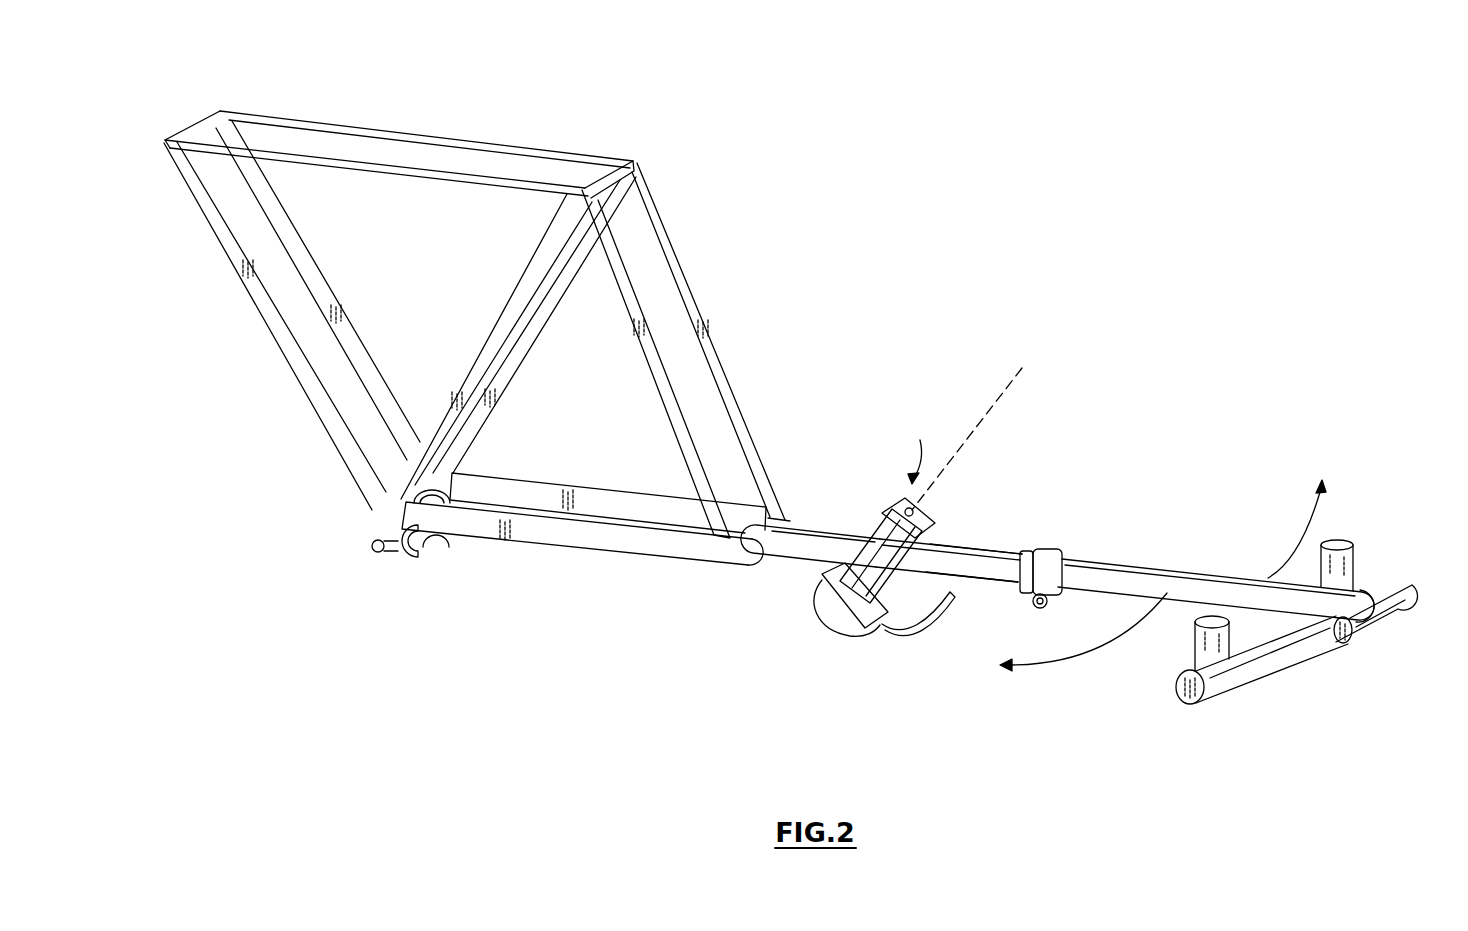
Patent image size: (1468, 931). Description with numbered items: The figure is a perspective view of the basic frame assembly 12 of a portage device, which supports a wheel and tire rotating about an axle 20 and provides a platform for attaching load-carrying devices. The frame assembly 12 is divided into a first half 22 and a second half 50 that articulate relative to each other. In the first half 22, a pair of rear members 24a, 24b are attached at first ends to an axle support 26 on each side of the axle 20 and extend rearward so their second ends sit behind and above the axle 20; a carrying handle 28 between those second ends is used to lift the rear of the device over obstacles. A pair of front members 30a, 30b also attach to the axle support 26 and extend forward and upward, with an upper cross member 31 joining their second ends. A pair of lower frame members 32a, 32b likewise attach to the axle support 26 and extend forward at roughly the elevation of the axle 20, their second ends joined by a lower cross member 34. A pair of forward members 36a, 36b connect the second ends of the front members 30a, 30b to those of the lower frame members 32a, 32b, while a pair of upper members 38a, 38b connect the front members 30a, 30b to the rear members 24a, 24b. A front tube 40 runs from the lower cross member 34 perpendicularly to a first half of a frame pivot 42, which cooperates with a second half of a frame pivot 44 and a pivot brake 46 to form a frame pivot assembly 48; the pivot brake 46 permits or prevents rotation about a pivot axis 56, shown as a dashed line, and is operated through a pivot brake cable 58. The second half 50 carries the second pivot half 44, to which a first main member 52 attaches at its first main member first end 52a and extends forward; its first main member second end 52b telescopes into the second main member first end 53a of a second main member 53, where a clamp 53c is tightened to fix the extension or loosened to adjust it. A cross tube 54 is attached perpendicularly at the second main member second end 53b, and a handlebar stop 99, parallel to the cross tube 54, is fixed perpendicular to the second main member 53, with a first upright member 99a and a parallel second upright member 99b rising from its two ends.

The frame assembly 12 is at (852, 136).
The axle 20 is at (393, 558).
The first half of the frame assembly 22 is at (207, 675).
The rear member 24a is at (300, 370).
The rear member 24b is at (308, 250).
The axle support 26 is at (395, 520).
The carrying handle 28 is at (198, 128).
The front member 30a is at (481, 344).
The front member 30b is at (511, 358).
The upper cross member 31 is at (607, 187).
The lower frame member 32a is at (522, 545).
The lower frame member 32b is at (540, 495).
The lower cross member 34 is at (740, 550).
The forward member 36a is at (663, 385).
The forward member 36b is at (697, 300).
The upper member 38a is at (496, 175).
The upper member 38b is at (410, 128).
The front tube 40 is at (817, 540).
The first half of a frame pivot 42 is at (878, 520).
The second half of a frame pivot 44 is at (920, 510).
The pivot brake 46 is at (818, 595).
The frame pivot assembly 48 is at (905, 444).
The second half of the frame assembly 50 is at (1445, 747).
The first main member 52 is at (970, 575).
The first main member first end 52a is at (935, 548).
The first main member second end 52b is at (1018, 550).
The second main member 53 is at (1200, 580).
The second main member first end 53a is at (1032, 555).
The second main member second end 53b is at (1355, 597).
The clamp 53c is at (1040, 608).
The cross tube 54 is at (1403, 605).
The pivot axis 56 is at (1015, 385).
The pivot brake cable 58 is at (922, 605).
The handlebar stop 99 is at (1255, 677).
The first upright member 99a is at (1200, 643).
The second upright member 99b is at (1355, 560).